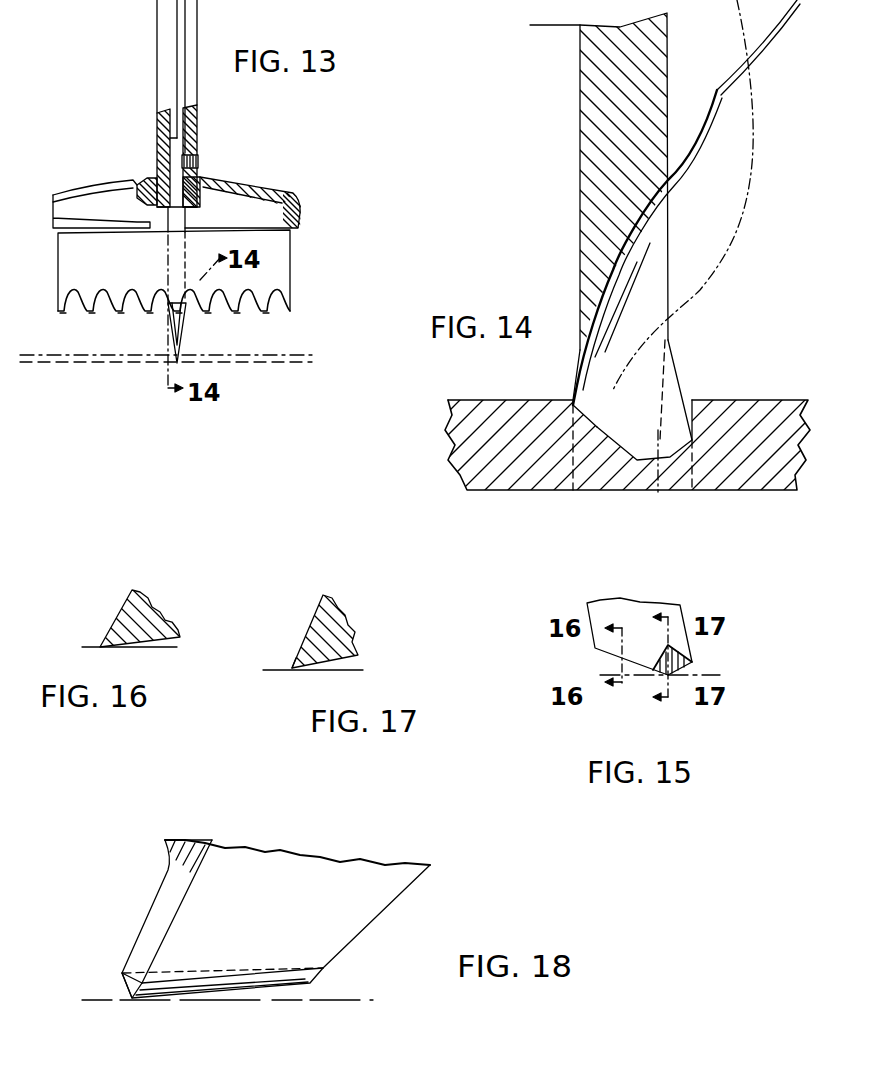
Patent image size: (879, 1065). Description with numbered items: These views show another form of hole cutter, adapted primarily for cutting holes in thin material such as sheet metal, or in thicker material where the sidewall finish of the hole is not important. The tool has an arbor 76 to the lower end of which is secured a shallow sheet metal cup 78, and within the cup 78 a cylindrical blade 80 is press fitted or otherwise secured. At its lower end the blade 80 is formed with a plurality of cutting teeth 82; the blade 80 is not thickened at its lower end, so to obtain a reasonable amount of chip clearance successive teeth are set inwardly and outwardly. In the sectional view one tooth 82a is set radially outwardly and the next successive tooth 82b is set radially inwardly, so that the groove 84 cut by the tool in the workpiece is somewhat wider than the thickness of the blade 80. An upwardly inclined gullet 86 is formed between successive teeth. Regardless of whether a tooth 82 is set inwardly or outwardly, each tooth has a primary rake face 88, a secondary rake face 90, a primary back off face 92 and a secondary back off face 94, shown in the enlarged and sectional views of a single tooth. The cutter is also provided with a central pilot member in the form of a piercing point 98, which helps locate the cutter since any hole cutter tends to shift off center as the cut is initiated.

In FIG. 13, the arbor 76 is at (200, 137).
In FIG. 13, the shallow sheet metal cup 78 is at (298, 197).
In FIG. 13, the cylindrical blade 80 is at (282, 258).
In FIG. 14, the cylindrical blade 80 is at (585, 127).
In FIG. 13, the cutting teeth 82 is at (233, 313).
In FIG. 14, the tooth set radially outwardly 82a is at (672, 393).
In FIG. 14, the tooth set radially inwardly 82b is at (582, 390).
In FIG. 14, the groove 84 is at (697, 417).
In FIG. 14, the upwardly inclined gullet 86 is at (650, 242).
In FIG. 18, the upwardly inclined gullet 86 is at (195, 855).
In FIG. 16, the primary rake face 88 is at (113, 620).
In FIG. 17, the primary rake face 88 is at (315, 603).
In FIG. 15, the primary rake face 88 is at (640, 610).
In FIG. 18, the primary rake face 88 is at (158, 918).
In FIG. 14, the secondary rake face 90 is at (657, 490).
In FIG. 17, the secondary rake face 90 is at (290, 657).
In FIG. 15, the secondary rake face 90 is at (687, 657).
In FIG. 18, the secondary rake face 90 is at (130, 997).
In FIG. 16, the primary back off face 92 is at (168, 638).
In FIG. 18, the primary back off face 92 is at (195, 972).
In FIG. 17, the secondary back off face 94 is at (345, 660).
In FIG. 18, the secondary back off face 94 is at (202, 987).
In FIG. 13, the piercing point 98 is at (173, 338).